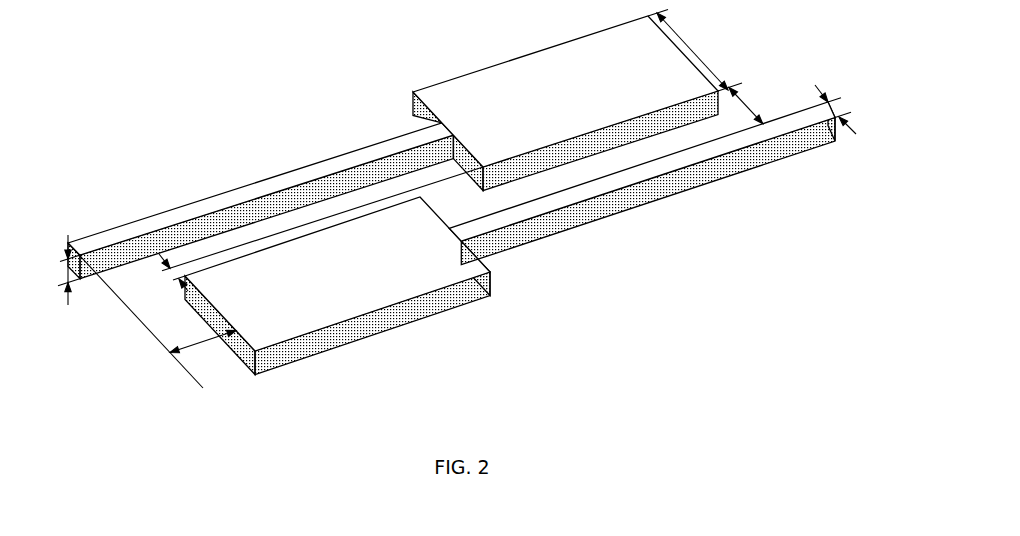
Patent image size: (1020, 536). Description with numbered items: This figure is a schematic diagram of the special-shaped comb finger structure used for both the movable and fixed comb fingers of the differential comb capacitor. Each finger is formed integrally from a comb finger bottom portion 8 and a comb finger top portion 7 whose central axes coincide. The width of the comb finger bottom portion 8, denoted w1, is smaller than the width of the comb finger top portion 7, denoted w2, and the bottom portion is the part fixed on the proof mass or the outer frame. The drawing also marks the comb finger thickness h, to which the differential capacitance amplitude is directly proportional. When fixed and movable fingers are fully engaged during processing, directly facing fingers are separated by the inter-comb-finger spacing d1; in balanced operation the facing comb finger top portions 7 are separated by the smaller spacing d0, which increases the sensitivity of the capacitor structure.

The comb finger top portion 7 is at (492, 68).
The comb finger bottom portion 8 is at (673, 162).
The width of the comb finger top portion w2 is at (695, 51).
The width of the comb finger bottom portion w1 is at (844, 109).
The inter-comb-finger spacing d1 is at (421, 238).
The spacing between comb finger top portions d0 is at (316, 234).
The comb finger thickness h is at (66, 270).